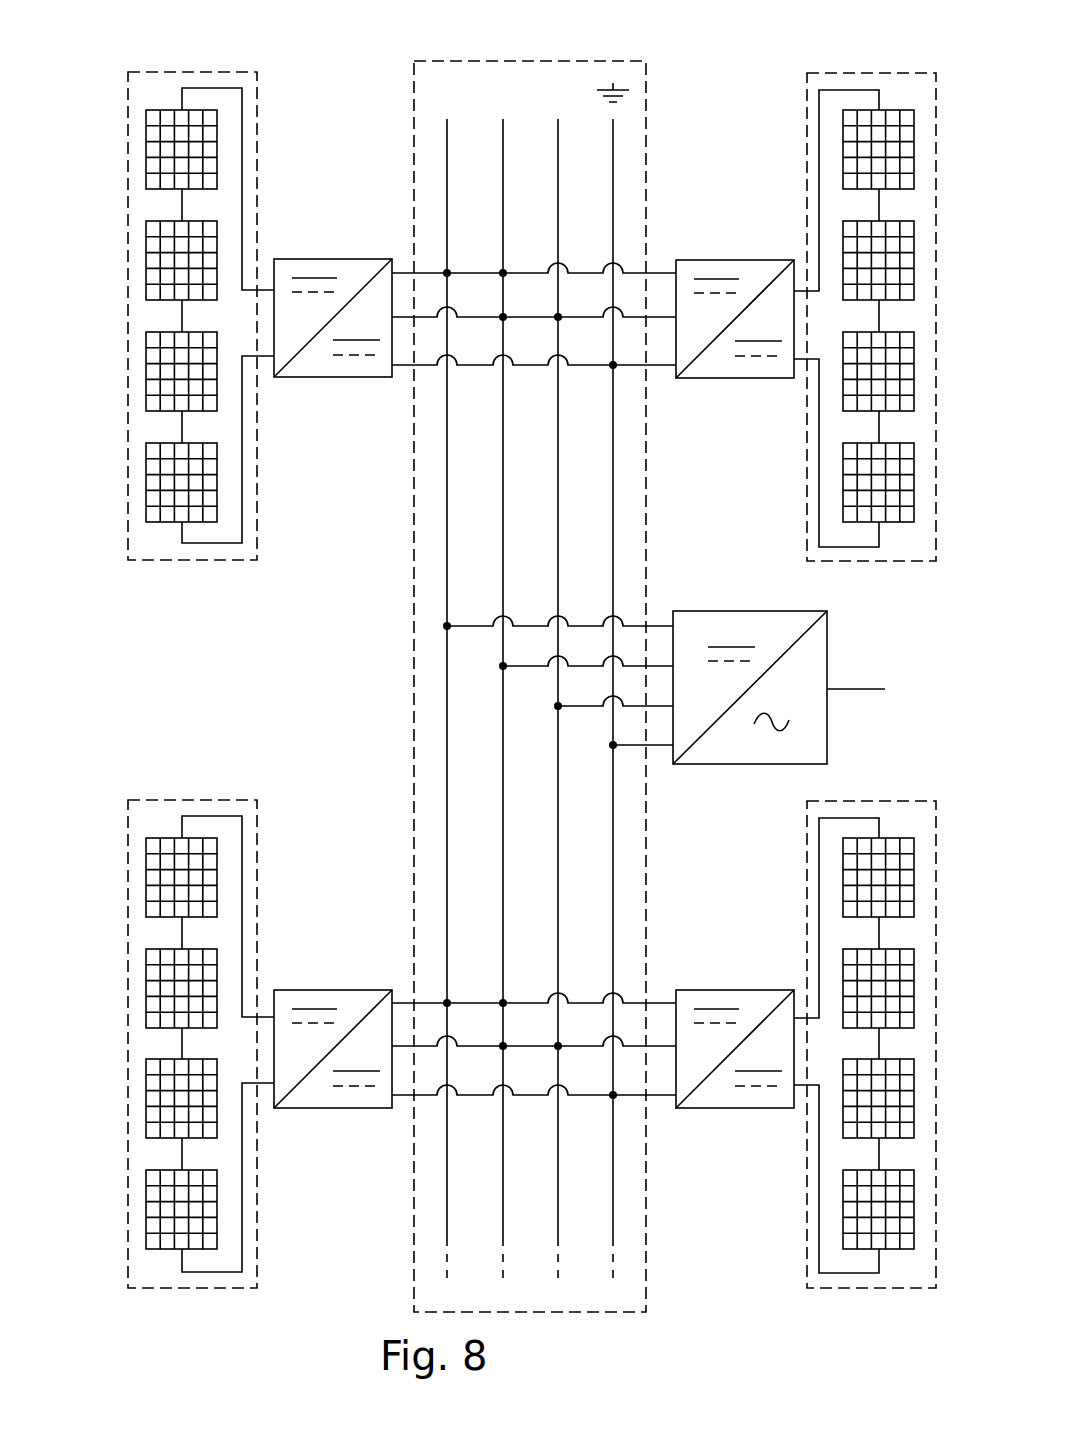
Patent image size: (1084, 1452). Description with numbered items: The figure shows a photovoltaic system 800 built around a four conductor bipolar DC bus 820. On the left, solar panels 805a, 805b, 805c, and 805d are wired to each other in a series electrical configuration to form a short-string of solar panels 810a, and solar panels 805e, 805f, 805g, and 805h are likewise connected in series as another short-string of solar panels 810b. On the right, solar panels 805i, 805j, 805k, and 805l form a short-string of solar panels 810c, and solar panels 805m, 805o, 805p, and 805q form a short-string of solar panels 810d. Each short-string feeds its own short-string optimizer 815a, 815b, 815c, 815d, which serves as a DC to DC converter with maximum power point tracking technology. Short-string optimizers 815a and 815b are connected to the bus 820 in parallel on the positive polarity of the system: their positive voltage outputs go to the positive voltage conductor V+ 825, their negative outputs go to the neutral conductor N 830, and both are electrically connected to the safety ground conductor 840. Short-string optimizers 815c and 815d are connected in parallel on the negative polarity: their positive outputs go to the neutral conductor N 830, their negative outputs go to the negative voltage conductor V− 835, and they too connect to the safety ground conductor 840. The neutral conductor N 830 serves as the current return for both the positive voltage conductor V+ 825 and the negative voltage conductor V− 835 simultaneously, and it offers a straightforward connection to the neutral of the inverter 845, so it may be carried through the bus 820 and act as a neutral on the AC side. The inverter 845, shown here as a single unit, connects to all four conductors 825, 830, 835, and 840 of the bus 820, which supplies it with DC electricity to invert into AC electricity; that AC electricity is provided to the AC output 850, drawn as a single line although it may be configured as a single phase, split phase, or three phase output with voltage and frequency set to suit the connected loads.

The photovoltaic system 800 is at (110, 33).
The solar panel 805a is at (146, 148).
The solar panel 805b is at (146, 258).
The solar panel 805c is at (146, 370).
The solar panel 805d is at (146, 480).
The solar panel 805e is at (146, 877).
The solar panel 805f is at (146, 987).
The solar panel 805g is at (146, 1097).
The solar panel 805h is at (146, 1207).
The solar panel 805i is at (843, 150).
The solar panel 805j is at (843, 228).
The solar panel 805k is at (843, 388).
The solar panel 805l is at (891, 523).
The solar panel 805m is at (843, 863).
The solar panel 805o is at (843, 957).
The solar panel 805p is at (843, 1115).
The solar panel 805q is at (893, 1250).
The short-string of solar panels 810a is at (184, 72).
The short-string of solar panels 810b is at (257, 828).
The short-string of solar panels 810c is at (863, 73).
The short-string of solar panels 810d is at (853, 801).
The short-string optimizer 815a is at (320, 377).
The short-string optimizer 815b is at (313, 990).
The short-string optimizer 815c is at (720, 378).
The short-string optimizer 815d is at (714, 990).
The four conductor bipolar DC bus 820 is at (592, 61).
The positive voltage conductor V+ 825 is at (447, 175).
The neutral conductor N 830 is at (503, 147).
The negative voltage conductor V− 835 is at (558, 147).
The safety ground conductor 840 is at (613, 168).
The inverter 845 is at (748, 611).
The AC output 850 is at (852, 689).